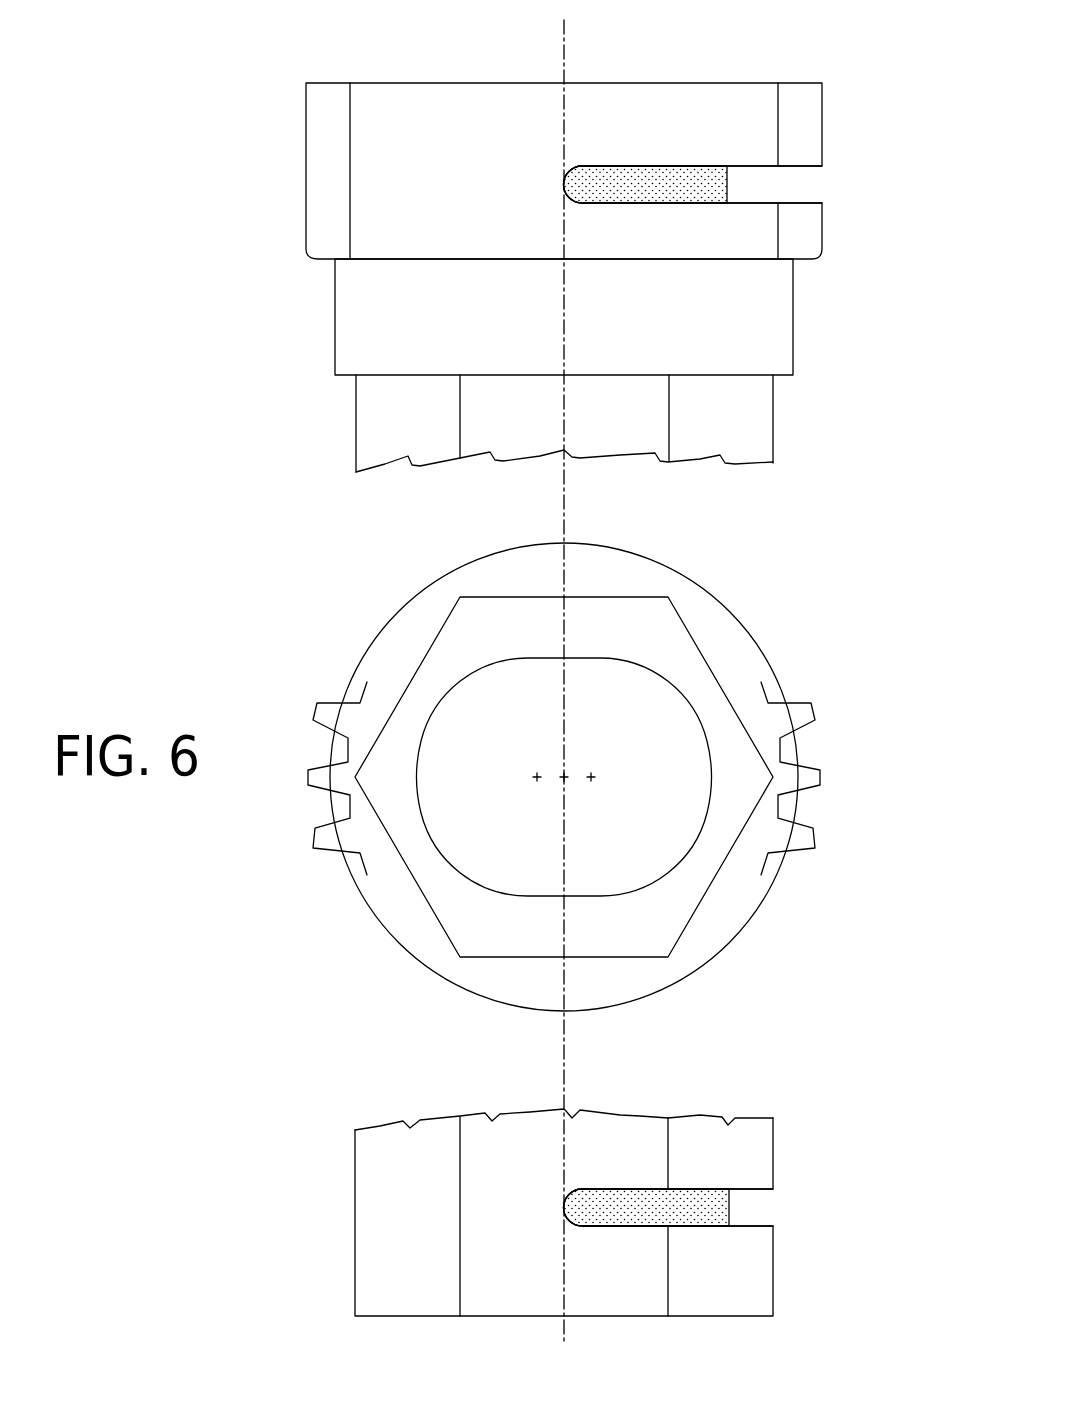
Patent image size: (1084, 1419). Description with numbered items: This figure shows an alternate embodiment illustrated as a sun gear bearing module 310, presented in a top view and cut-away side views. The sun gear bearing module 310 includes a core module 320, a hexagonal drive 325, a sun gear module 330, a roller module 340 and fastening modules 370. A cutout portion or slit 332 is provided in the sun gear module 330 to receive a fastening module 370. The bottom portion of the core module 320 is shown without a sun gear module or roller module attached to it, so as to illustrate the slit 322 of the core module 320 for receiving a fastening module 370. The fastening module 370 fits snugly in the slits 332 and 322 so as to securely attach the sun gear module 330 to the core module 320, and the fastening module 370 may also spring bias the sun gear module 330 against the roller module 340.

The sun gear bearing module 310 is at (802, 50).
The core module 320 is at (661, 415).
The slit 322 is at (750, 1210).
The hexagonal drive 325 is at (663, 643).
The sun gear module 330 is at (823, 115).
The slit 332 is at (797, 187).
The roller module 340 is at (336, 336).
The fastening module 370 is at (663, 180).